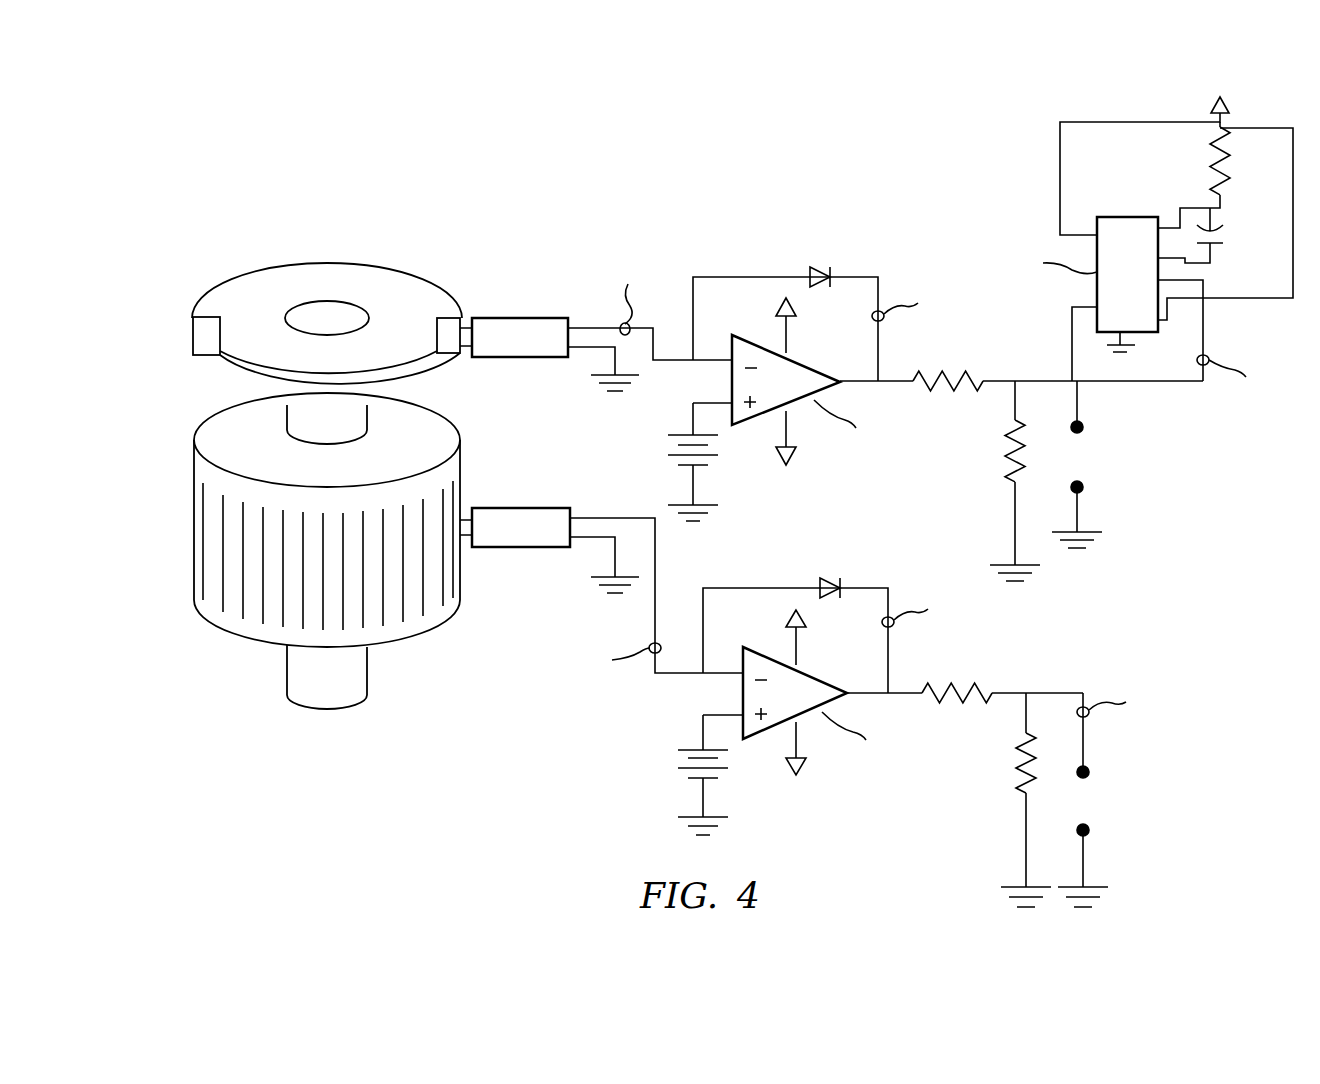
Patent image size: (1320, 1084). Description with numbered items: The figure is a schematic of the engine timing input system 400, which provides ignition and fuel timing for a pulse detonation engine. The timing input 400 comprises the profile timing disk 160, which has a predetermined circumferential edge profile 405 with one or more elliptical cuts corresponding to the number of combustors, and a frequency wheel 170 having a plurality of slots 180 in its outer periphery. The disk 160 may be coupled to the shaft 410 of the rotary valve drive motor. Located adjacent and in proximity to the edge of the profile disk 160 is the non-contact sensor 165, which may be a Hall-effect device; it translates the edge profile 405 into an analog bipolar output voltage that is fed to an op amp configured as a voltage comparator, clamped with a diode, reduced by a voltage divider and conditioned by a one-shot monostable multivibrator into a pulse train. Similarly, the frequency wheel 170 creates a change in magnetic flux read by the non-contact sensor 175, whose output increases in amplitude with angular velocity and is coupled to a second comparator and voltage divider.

The profile timing disk 160 is at (308, 273).
The non-contact sensor 165 is at (492, 325).
The frequency wheel 170 is at (214, 430).
The non-contact sensor 175 is at (517, 518).
The slots 180 is at (240, 615).
The engine timing input system 400 is at (651, 198).
The circumferential edge profile 405 is at (236, 364).
The shaft 410 is at (353, 423).